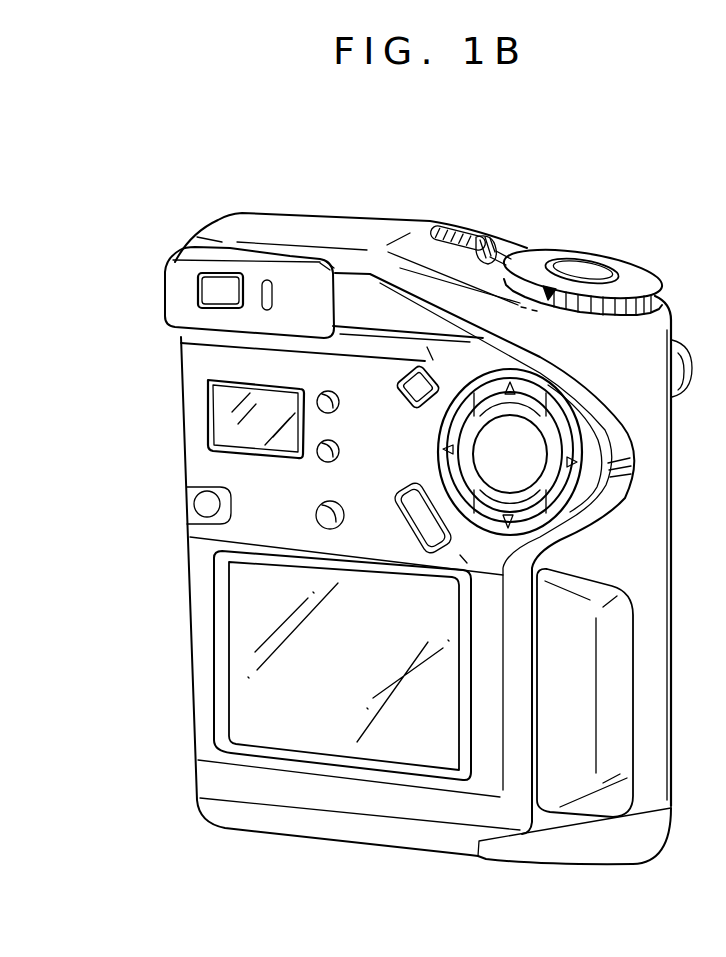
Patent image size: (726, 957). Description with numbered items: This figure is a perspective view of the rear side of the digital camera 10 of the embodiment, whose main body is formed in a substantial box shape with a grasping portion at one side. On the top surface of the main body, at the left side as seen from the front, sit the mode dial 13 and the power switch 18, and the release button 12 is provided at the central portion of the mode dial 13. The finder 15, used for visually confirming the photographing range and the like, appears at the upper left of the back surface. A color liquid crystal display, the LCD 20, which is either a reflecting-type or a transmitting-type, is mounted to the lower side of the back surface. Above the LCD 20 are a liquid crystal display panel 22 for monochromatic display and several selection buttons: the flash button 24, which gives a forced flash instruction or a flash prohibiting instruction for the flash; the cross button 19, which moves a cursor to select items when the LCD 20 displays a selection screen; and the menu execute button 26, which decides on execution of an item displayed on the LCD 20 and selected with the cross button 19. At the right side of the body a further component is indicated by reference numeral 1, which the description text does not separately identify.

The digital camera 10 is at (457, 173).
The camera body 1 is at (650, 584).
The release button 12 is at (587, 268).
The mode dial 13 is at (633, 278).
The finder 15 is at (222, 292).
The power switch 18 is at (477, 233).
The cross button 19 is at (517, 447).
The liquid crystal display (LCD) 20 is at (263, 607).
The liquid crystal display panel 22 is at (225, 441).
The flash button 24 is at (318, 396).
The menu execute button 26 is at (410, 398).